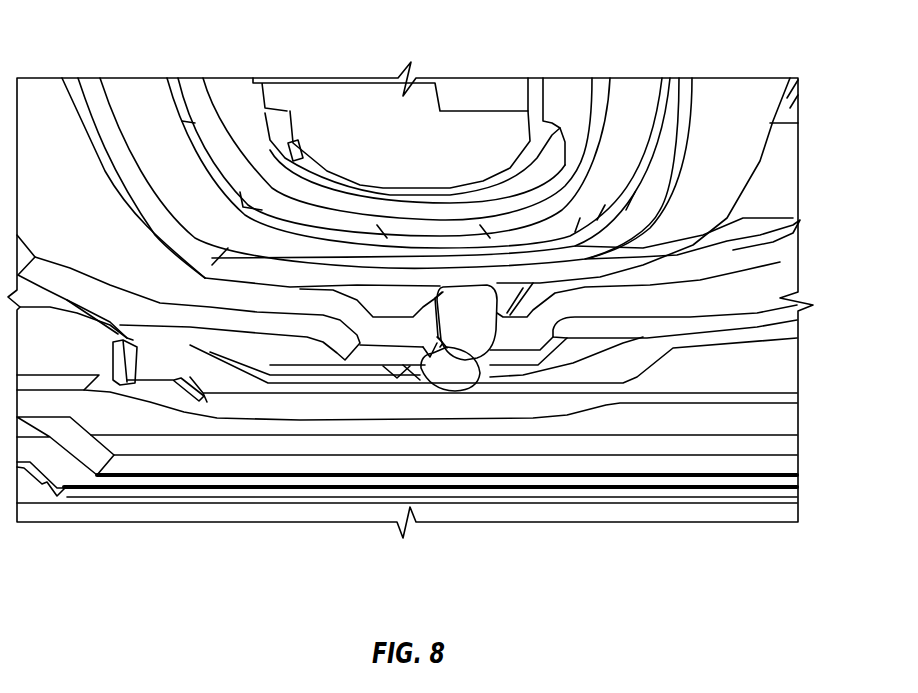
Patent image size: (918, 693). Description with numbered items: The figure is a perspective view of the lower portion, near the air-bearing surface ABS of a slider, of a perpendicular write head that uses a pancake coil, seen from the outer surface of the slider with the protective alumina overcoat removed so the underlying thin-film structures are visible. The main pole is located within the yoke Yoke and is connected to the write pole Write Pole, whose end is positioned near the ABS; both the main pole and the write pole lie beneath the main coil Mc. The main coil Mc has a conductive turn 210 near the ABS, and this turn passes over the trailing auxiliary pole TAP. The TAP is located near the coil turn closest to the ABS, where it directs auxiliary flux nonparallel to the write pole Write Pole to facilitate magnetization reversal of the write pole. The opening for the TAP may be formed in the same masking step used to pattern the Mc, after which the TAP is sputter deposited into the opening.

The yoke Yoke is at (462, 140).
The main coil Mc is at (797, 56).
The conductive turn 210 is at (670, 295).
The trailing auxiliary pole TAP is at (468, 323).
The write pole Write Pole is at (420, 368).
The air-bearing surface ABS is at (688, 513).